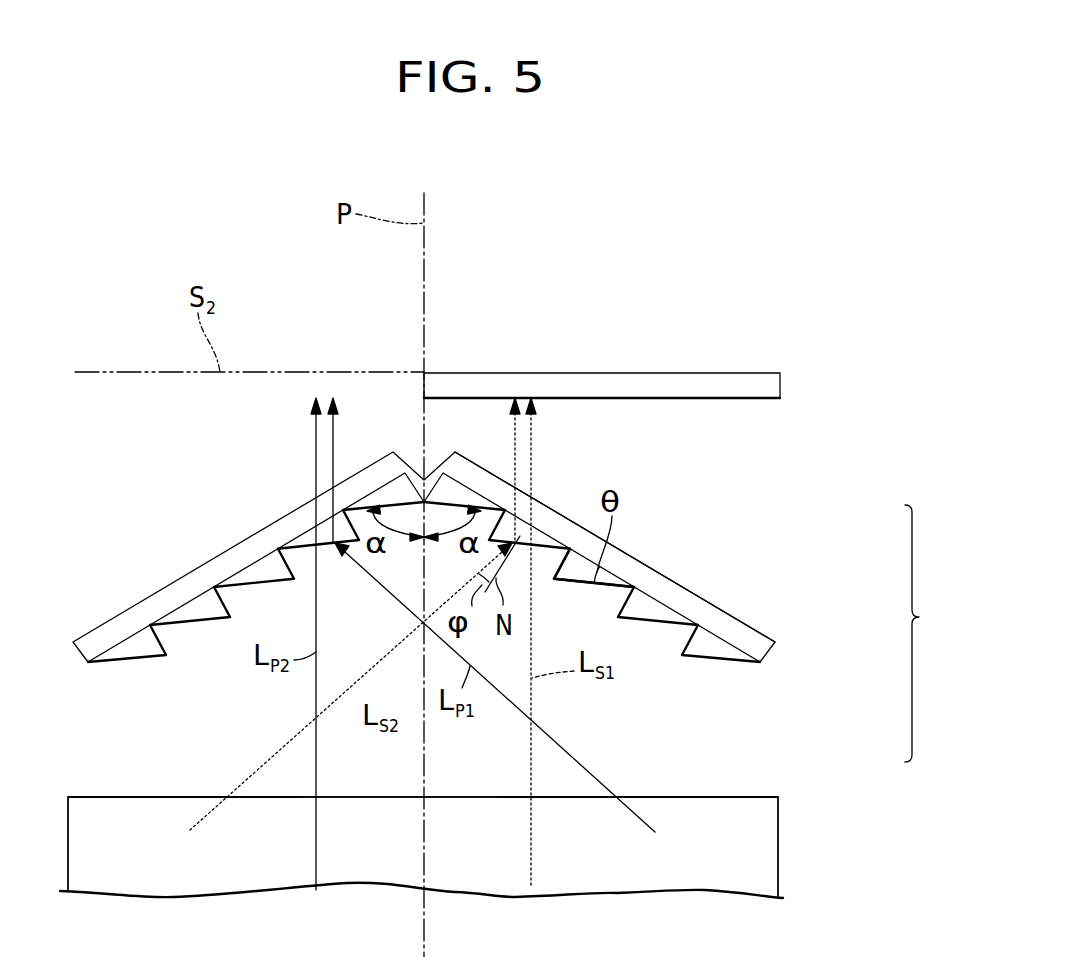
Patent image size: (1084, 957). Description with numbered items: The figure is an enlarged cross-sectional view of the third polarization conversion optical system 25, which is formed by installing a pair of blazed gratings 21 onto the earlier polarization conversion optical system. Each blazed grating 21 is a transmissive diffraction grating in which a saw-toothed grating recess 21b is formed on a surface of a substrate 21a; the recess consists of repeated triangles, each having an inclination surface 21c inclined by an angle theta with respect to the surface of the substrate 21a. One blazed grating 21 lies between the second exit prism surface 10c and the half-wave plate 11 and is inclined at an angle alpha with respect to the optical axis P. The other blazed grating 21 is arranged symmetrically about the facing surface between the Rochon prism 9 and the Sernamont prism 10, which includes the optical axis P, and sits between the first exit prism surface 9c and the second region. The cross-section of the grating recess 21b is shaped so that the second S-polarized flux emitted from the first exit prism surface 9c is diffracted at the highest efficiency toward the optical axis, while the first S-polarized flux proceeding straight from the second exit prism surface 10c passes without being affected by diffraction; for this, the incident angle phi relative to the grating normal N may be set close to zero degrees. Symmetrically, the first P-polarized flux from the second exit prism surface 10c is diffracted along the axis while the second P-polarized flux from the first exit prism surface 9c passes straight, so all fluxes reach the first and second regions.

The Rochon prism 9 is at (380, 812).
The first exit prism surface 9c is at (92, 797).
The Sernamont prism 10 is at (743, 815).
The second exit prism surface 10c is at (680, 797).
The half-wave plate 11 is at (618, 373).
The blazed grating 21 is at (172, 581).
The substrate 21a is at (657, 570).
The saw-toothed grating recess 21b is at (553, 548).
The inclination surface 21c is at (583, 585).
The third polarization conversion optical system 25 is at (955, 629).